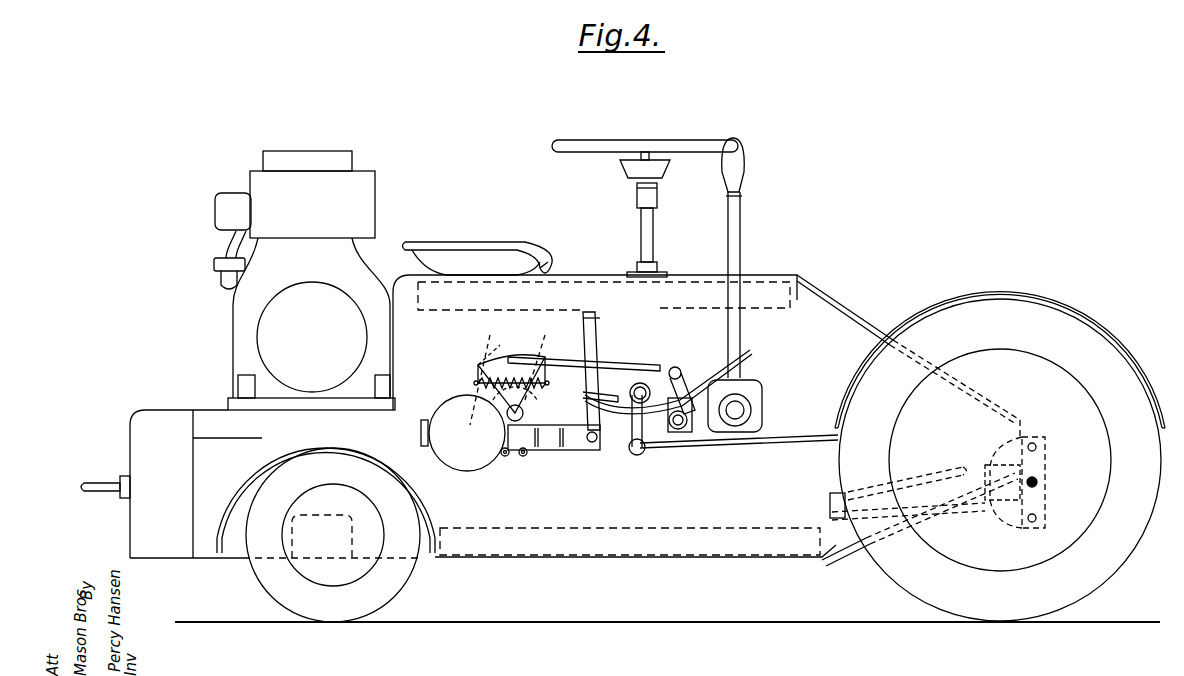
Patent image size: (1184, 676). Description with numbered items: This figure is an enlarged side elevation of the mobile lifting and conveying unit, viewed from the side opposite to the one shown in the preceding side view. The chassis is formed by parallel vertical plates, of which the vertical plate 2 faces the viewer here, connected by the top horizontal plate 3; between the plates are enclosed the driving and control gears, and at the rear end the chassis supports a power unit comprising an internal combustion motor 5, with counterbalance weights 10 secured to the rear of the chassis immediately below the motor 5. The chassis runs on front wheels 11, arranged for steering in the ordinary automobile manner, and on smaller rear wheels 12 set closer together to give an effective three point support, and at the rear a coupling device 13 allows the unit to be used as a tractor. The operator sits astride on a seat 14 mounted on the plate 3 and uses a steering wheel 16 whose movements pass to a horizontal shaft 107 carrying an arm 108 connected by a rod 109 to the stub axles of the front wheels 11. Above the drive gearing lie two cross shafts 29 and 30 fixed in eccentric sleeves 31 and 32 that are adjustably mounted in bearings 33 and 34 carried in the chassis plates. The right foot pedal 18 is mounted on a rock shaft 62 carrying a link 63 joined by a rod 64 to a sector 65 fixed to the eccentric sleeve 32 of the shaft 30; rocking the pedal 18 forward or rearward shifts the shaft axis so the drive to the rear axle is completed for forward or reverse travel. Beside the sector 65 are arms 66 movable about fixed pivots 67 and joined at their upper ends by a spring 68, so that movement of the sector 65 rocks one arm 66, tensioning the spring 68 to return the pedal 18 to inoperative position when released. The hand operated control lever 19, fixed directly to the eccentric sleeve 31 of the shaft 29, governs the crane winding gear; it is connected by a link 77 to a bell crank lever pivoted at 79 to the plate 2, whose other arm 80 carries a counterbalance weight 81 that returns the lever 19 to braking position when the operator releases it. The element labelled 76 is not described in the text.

The vertical plate 2 is at (818, 300).
The horizontal plate 3 is at (578, 275).
The internal combustion motor 5 is at (265, 274).
The weights 10 is at (155, 420).
The front wheels 11 is at (1078, 336).
The rear wheels 12 is at (272, 578).
The coupling device 13 is at (100, 482).
The seat 14 is at (466, 244).
The steering wheel 16 is at (680, 140).
The right foot pedal 18 is at (696, 432).
The hand operated control lever 19 is at (742, 232).
The cross shaft 29 is at (752, 400).
The cross shaft 30 is at (524, 413).
The eccentric sleeve 31 is at (745, 405).
The eccentric sleeve 32 is at (528, 360).
The bearing 33 is at (762, 416).
The bearing 34 is at (500, 355).
The rock shaft 62 is at (676, 430).
The link 63 is at (683, 385).
The rod 64 is at (626, 366).
The sector 65 is at (490, 368).
The arms 66 is at (473, 383).
The fixed pivots 67 is at (506, 458).
The spring 68 is at (478, 380).
The lever 76 is at (591, 356).
The link 77 is at (655, 318).
The pivot 79 is at (592, 444).
The arm 80 is at (525, 462).
The counterbalance weight 81 is at (460, 465).
The horizontal shaft 107 is at (646, 386).
The arm 108 is at (632, 450).
The rod 109 is at (793, 442).